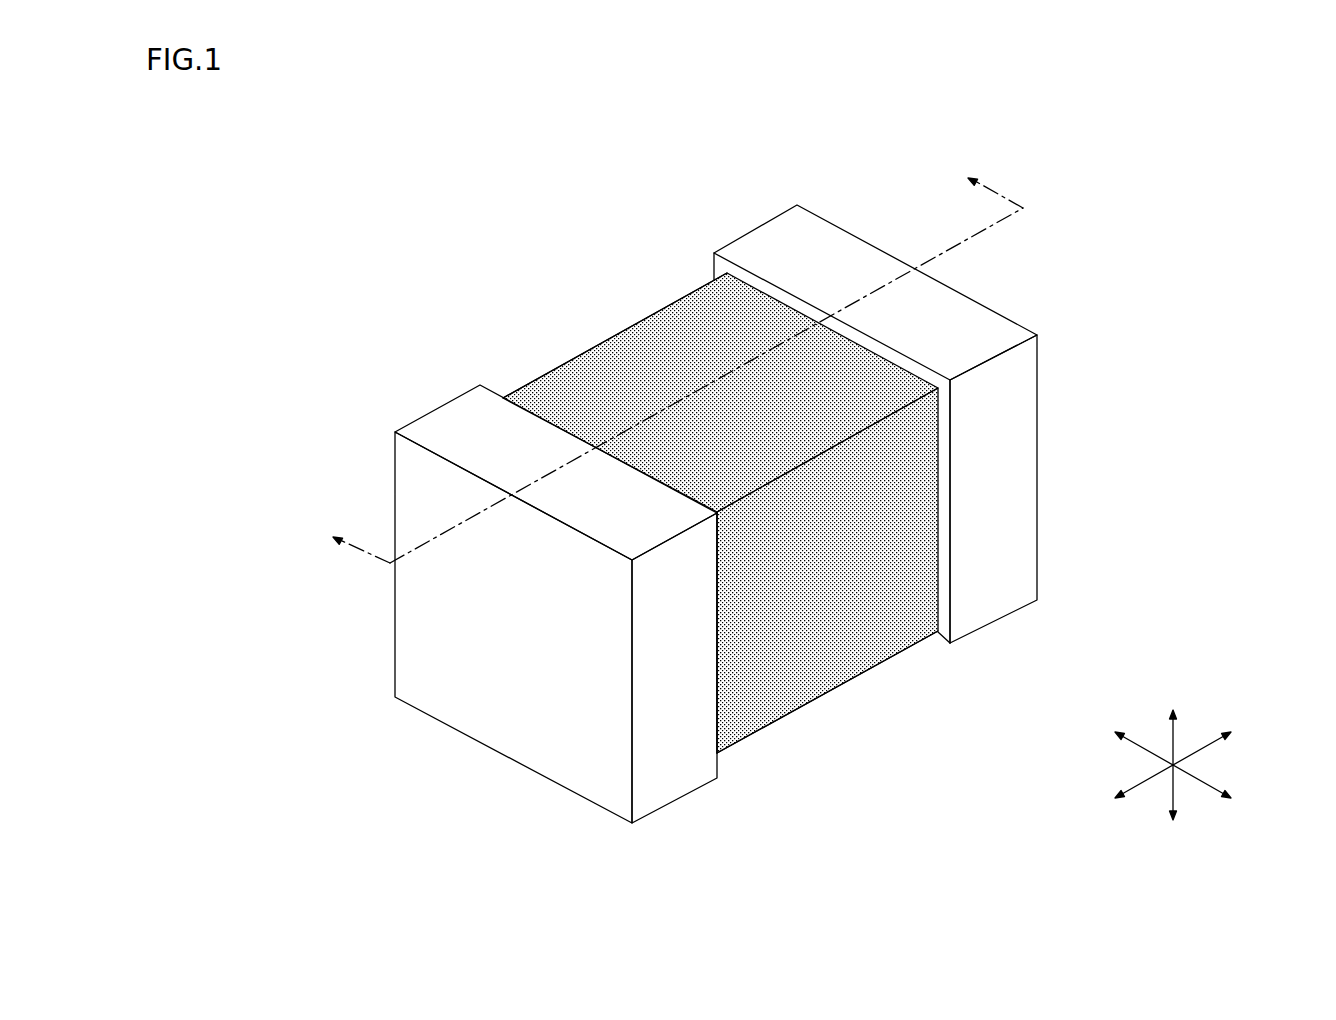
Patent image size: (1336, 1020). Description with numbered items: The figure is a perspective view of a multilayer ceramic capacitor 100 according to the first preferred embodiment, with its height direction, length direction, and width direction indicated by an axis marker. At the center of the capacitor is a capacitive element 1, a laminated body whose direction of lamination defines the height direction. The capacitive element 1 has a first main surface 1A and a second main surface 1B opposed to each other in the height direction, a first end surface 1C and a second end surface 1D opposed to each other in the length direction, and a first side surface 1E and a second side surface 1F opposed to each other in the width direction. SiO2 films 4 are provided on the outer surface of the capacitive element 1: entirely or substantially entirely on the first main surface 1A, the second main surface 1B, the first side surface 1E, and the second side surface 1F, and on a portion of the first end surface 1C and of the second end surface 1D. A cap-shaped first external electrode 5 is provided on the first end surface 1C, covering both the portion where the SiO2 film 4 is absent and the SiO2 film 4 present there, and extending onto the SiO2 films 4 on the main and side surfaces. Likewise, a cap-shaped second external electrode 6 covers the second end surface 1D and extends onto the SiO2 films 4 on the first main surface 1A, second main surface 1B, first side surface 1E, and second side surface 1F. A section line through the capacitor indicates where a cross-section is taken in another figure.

The multilayer ceramic capacitor 100 is at (297, 138).
The capacitive element 1 is at (587, 378).
The first main surface 1A is at (836, 702).
The second main surface 1B is at (666, 369).
The first end surface 1C is at (508, 629).
The second end surface 1D is at (1050, 461).
The first side surface 1E is at (604, 332).
The second side surface 1F is at (842, 579).
The SiO2 film 4 is at (552, 403).
The first external electrode 5 is at (461, 405).
The second external electrode 6 is at (788, 257).